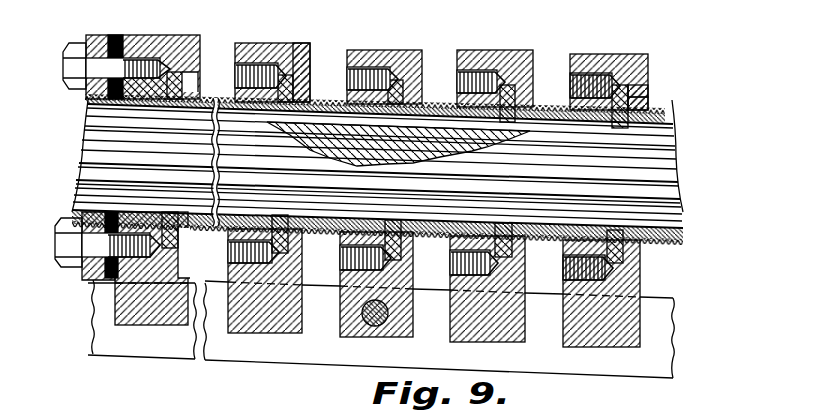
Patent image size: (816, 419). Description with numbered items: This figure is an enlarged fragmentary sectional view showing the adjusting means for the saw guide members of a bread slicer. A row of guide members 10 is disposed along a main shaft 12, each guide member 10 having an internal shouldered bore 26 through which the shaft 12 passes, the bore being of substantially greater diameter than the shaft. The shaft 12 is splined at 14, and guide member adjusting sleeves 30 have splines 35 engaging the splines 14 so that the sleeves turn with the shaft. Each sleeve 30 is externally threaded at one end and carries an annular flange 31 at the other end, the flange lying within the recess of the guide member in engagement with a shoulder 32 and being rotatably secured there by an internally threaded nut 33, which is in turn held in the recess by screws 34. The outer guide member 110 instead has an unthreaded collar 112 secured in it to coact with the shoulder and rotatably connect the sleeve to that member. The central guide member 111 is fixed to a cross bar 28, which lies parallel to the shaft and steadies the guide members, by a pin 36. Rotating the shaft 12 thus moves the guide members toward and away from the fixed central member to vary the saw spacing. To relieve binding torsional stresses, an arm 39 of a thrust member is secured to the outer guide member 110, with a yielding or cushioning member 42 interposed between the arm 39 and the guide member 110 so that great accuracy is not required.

The guide member 10 is at (508, 62).
The main shaft 12 is at (680, 206).
The splines 14 is at (672, 178).
The shouldered bore 26 is at (531, 105).
The cross bar 28 is at (207, 350).
The guide member adjusting sleeve 30 is at (210, 96).
The annular flange 31 is at (293, 45).
The shoulder 32 is at (197, 66).
The internally threaded nut 33 is at (275, 51).
The screw 34 is at (351, 70).
The splines 35 is at (329, 95).
The pin 36 is at (360, 336).
The arm 39 is at (93, 40).
The yielding or cushioning member 42 is at (118, 38).
The outer guide member 110 is at (171, 52).
The central guide member 111 is at (392, 57).
The unthreaded collar 112 is at (140, 220).